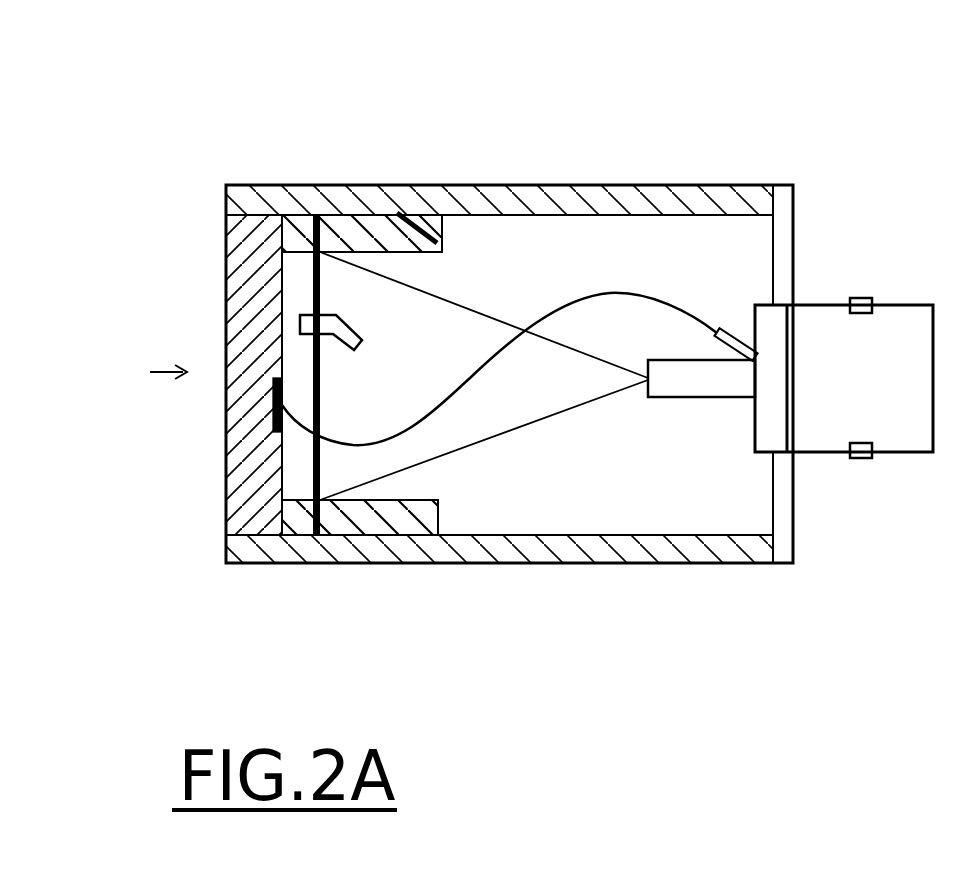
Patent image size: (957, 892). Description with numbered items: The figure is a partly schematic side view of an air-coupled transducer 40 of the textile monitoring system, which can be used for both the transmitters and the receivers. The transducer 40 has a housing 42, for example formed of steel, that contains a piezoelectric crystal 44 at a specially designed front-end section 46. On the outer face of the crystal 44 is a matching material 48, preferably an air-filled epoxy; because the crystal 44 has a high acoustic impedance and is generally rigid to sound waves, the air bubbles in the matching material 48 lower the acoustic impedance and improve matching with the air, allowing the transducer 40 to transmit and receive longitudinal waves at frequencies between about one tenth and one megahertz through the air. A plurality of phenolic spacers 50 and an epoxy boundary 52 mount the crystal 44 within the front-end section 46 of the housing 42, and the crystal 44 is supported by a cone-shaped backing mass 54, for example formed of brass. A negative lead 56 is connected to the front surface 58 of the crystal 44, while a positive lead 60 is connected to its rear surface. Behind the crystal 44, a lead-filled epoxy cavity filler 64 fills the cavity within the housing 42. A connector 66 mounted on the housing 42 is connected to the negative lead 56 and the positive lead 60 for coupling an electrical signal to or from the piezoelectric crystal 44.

The air-coupled transducer 40 is at (468, 90).
The housing 42 is at (718, 203).
The crystal 44 is at (298, 455).
The front-end section 46 is at (152, 372).
The matching material 48 is at (238, 413).
The phenolic spacers 50 is at (287, 230).
The epoxy boundary 52 is at (305, 490).
The cone-shaped backing mass 54 is at (497, 407).
The negative lead 56 is at (520, 330).
The front surface 58 is at (227, 437).
The positive lead 60 is at (328, 318).
The lead-filled epoxy cavity filler 64 is at (625, 490).
The connector 66 is at (918, 437).